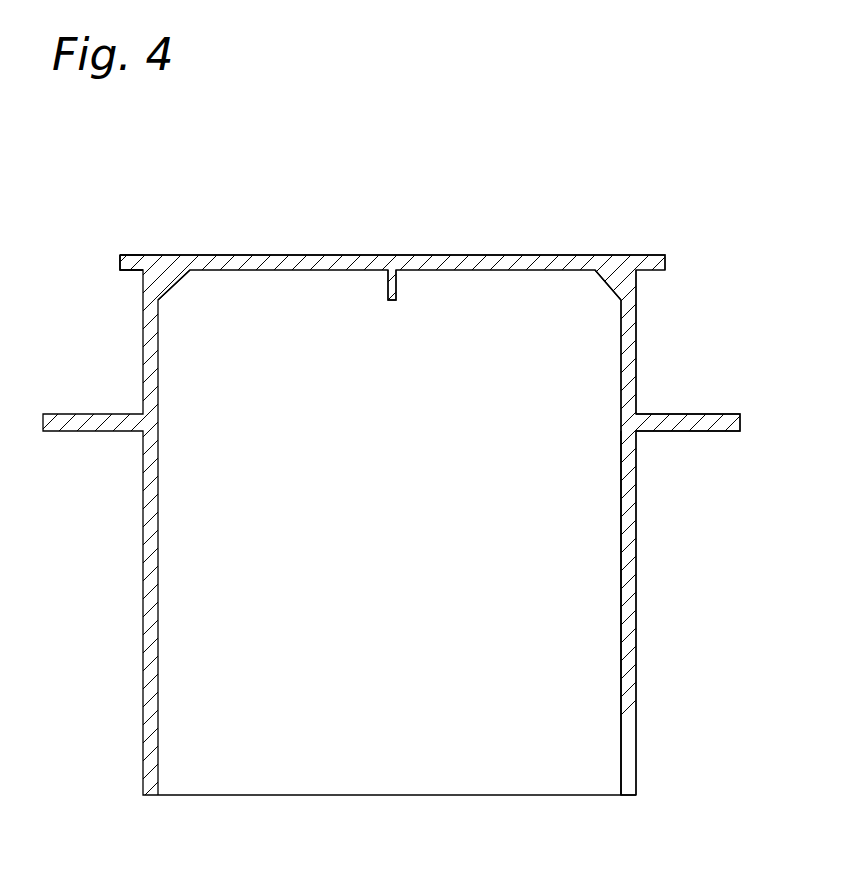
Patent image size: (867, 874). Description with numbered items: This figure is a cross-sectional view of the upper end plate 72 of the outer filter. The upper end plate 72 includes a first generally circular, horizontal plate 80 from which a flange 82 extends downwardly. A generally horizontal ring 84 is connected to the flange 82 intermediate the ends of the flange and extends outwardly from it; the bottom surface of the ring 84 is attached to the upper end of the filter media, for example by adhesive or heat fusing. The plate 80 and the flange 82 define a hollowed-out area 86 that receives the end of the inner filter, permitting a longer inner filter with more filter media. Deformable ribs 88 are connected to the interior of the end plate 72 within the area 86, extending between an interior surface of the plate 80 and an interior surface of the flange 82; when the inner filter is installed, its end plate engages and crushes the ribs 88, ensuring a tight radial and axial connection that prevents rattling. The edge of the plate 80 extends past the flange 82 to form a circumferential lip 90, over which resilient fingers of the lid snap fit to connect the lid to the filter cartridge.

The upper end plate 72 is at (639, 162).
The horizontal plate 80 is at (322, 255).
The flange 82 is at (633, 345).
The ring 84 is at (688, 412).
The hollowed-out area 86 is at (600, 510).
The deformable ribs 88 is at (172, 284).
The circumferential lip 90 is at (132, 255).